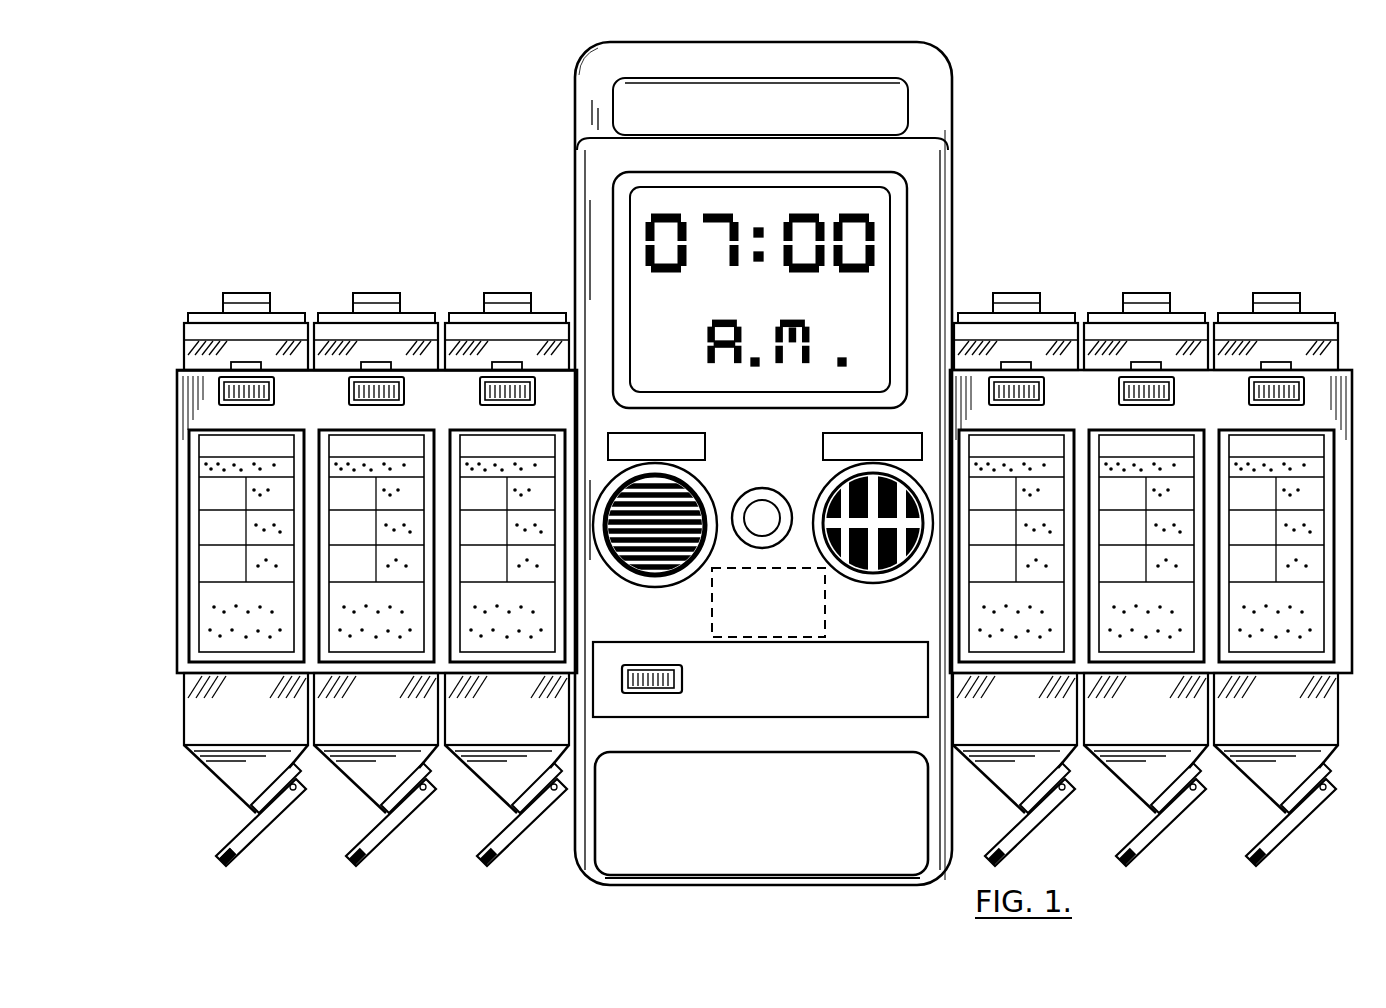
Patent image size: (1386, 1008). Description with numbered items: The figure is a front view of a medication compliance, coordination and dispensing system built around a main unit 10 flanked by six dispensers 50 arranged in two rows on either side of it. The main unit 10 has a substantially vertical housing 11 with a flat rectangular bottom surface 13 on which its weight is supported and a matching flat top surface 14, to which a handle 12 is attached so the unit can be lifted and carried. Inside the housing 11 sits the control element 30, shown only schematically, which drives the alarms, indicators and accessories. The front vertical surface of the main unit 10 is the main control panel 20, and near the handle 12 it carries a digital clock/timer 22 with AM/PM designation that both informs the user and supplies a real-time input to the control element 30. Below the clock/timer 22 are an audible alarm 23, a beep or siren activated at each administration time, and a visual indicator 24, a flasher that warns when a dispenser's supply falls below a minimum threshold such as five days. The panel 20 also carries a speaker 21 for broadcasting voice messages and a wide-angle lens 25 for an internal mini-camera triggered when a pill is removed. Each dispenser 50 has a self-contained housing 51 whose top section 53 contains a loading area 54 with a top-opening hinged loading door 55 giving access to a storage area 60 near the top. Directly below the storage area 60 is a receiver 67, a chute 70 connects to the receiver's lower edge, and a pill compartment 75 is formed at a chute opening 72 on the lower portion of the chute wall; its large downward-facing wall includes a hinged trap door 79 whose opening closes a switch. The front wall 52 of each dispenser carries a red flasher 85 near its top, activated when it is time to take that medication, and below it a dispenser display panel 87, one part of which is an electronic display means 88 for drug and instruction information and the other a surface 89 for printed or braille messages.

The main unit 10 is at (995, 177).
The housing 11 is at (958, 240).
The handle 12 is at (930, 63).
The bottom surface 13 is at (650, 888).
The top surface 14 is at (697, 135).
The main control panel 20 is at (732, 422).
The speaker 21 is at (883, 575).
The digital clock/timer 22 is at (873, 205).
The audible alarm 23 is at (690, 493).
The visual indicator 24 is at (636, 668).
The lens 25 is at (760, 492).
The control element 30 is at (820, 627).
The dispenser 50 is at (261, 268).
The dispenser housing 51 is at (172, 364).
The front wall 52 is at (326, 422).
The top section 53 is at (172, 348).
The loading area 54 is at (290, 312).
The loading door 55 is at (210, 312).
The storage area 60 is at (172, 373).
The receiver 67 is at (197, 715).
The chute 70 is at (207, 765).
The chute opening 72 is at (258, 795).
The pill compartment 75 is at (256, 810).
The trap door 79 is at (258, 832).
The flasher 85 is at (274, 391).
The dispenser display panel 87 is at (197, 522).
The electronic display means 88 is at (197, 500).
The message surface 89 is at (197, 617).